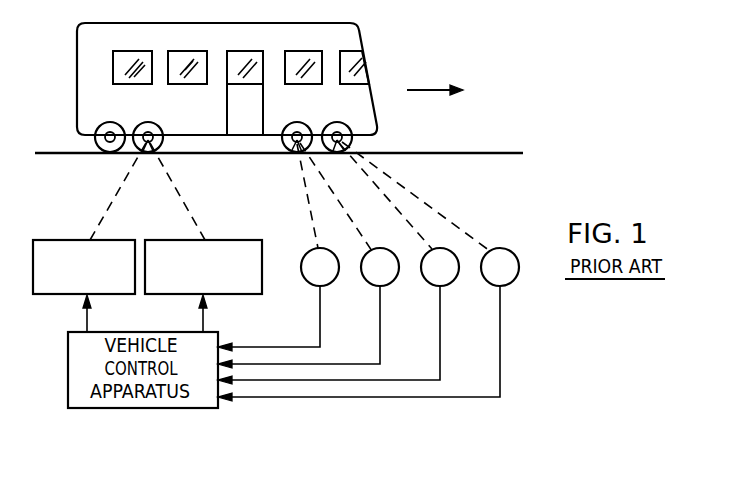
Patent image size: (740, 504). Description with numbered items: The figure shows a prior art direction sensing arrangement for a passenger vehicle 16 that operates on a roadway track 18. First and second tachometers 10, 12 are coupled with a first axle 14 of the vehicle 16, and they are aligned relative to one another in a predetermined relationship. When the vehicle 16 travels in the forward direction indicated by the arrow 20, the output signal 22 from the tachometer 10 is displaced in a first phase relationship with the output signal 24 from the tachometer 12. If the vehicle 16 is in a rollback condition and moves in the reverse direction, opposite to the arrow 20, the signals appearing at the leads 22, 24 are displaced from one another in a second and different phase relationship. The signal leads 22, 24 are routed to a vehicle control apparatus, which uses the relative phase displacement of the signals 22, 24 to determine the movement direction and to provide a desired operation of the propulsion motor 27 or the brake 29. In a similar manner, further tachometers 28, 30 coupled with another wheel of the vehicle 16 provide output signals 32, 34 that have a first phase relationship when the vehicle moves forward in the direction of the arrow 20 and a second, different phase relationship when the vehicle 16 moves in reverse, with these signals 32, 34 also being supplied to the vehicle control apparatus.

The vehicle 16 is at (80, 30).
The first axle 14 is at (290, 150).
The roadway track 18 is at (466, 153).
The arrow 20 is at (427, 93).
The brake 29 is at (60, 240).
The propulsion motor 27 is at (175, 240).
The first tachometer 10 is at (307, 281).
The second tachometer 12 is at (367, 281).
The tachometer 28 is at (427, 281).
The tachometer 30 is at (487, 281).
The output signal 22 is at (319, 329).
The output signal 24 is at (379, 329).
The output signal 32 is at (439, 329).
The output signal 34 is at (499, 329).